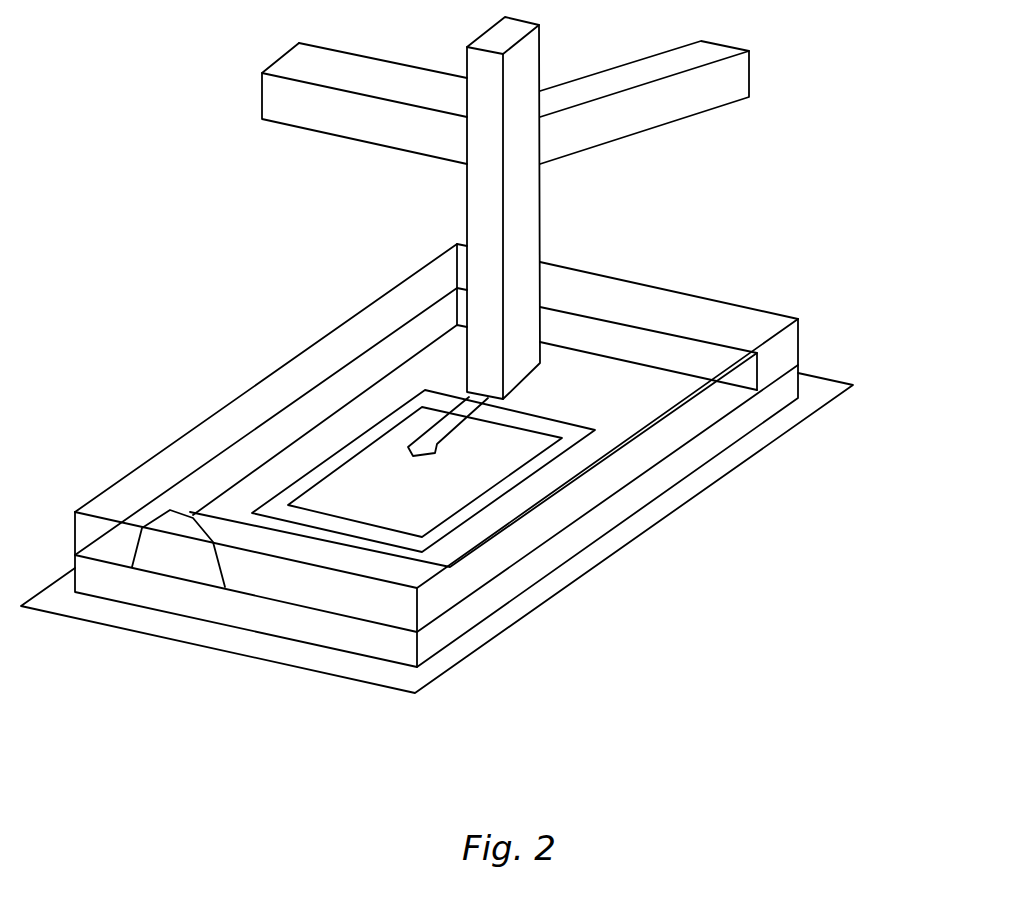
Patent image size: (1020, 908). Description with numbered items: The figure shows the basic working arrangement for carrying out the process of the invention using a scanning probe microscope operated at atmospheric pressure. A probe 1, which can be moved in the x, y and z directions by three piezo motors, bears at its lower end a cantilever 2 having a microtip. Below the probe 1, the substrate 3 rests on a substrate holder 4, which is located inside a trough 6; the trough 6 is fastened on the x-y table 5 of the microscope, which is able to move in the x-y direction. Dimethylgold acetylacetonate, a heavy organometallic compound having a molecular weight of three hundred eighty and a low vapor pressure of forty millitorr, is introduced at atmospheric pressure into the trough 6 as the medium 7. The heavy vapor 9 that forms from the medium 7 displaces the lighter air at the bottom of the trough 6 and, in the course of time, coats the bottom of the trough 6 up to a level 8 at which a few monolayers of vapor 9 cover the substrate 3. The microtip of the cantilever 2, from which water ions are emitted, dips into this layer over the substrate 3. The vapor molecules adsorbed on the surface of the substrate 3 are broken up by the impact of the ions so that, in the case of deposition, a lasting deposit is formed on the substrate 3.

The probe 1 is at (467, 276).
The cantilever 2 is at (427, 428).
The substrate 3 is at (460, 463).
The substrate holder 4 is at (487, 510).
The x-y table 5 is at (500, 637).
The trough 6 is at (640, 283).
The medium 7 is at (192, 568).
The level 8 is at (443, 617).
The vapor 9 is at (627, 422).